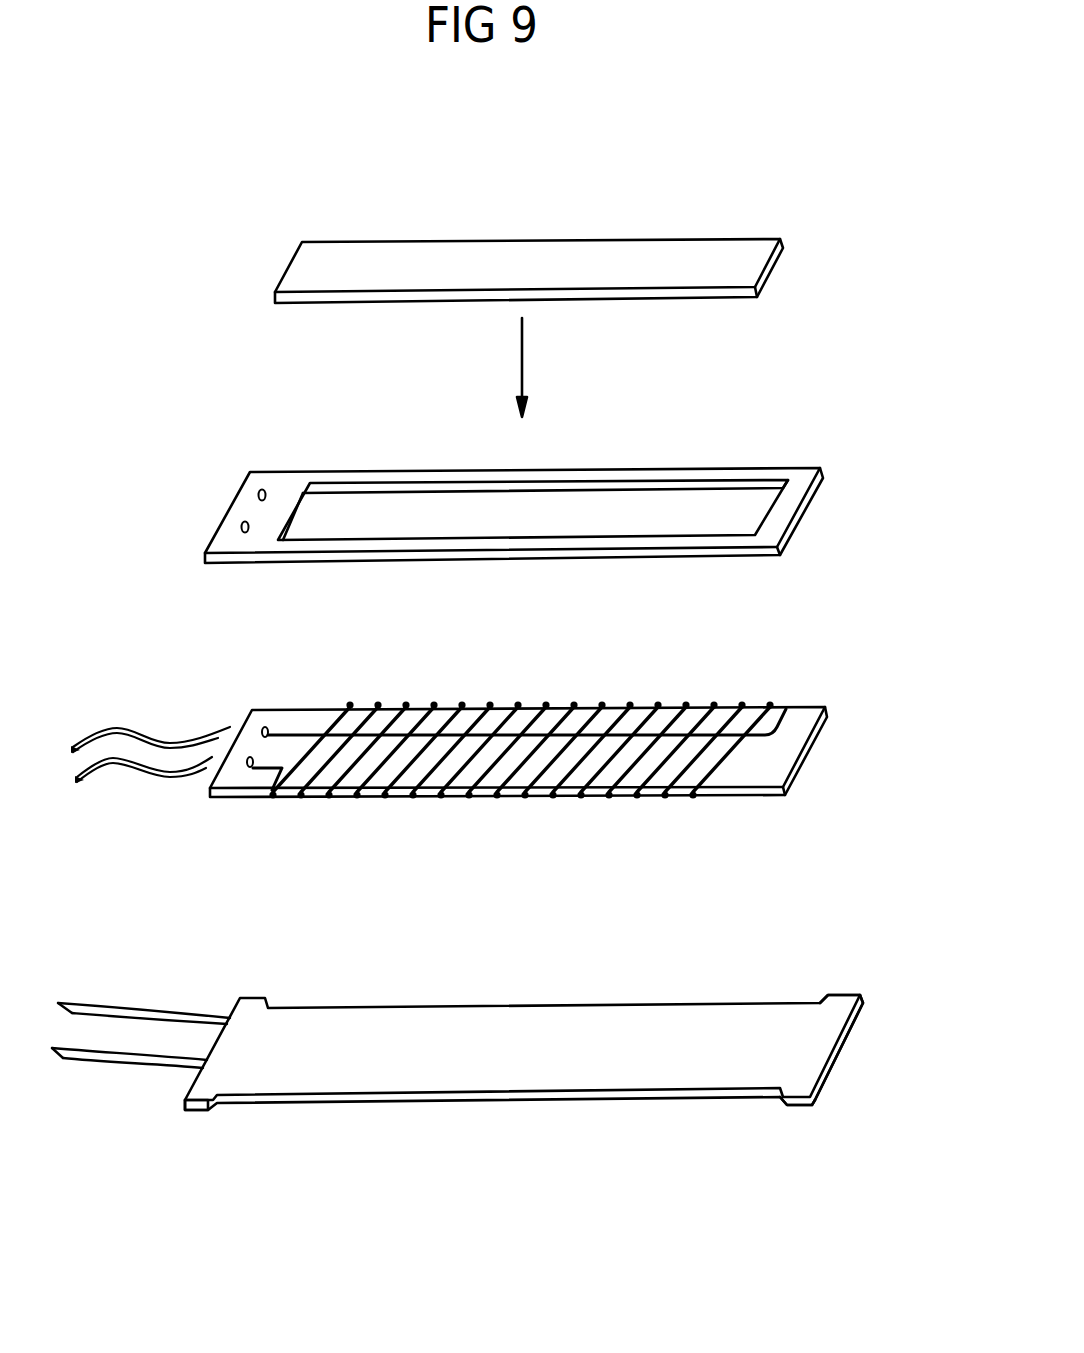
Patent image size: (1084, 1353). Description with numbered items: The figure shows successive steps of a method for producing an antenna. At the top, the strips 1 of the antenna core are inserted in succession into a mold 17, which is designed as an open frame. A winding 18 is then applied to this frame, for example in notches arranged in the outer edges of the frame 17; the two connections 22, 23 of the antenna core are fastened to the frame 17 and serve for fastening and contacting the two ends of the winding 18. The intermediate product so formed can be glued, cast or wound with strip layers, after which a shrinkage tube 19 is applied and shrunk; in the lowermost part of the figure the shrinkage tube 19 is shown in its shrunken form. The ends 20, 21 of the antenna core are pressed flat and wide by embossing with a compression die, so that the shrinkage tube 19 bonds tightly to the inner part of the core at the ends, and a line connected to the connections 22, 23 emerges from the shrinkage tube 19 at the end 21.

The strip 1 is at (777, 260).
The mold 17 is at (798, 508).
The winding 18 is at (678, 790).
The shrinkage tube 19 is at (467, 1093).
The end of the antenna core 20 is at (837, 1058).
The end of the antenna core 21 is at (202, 1110).
The connection 22 is at (248, 758).
The connection 23 is at (262, 727).